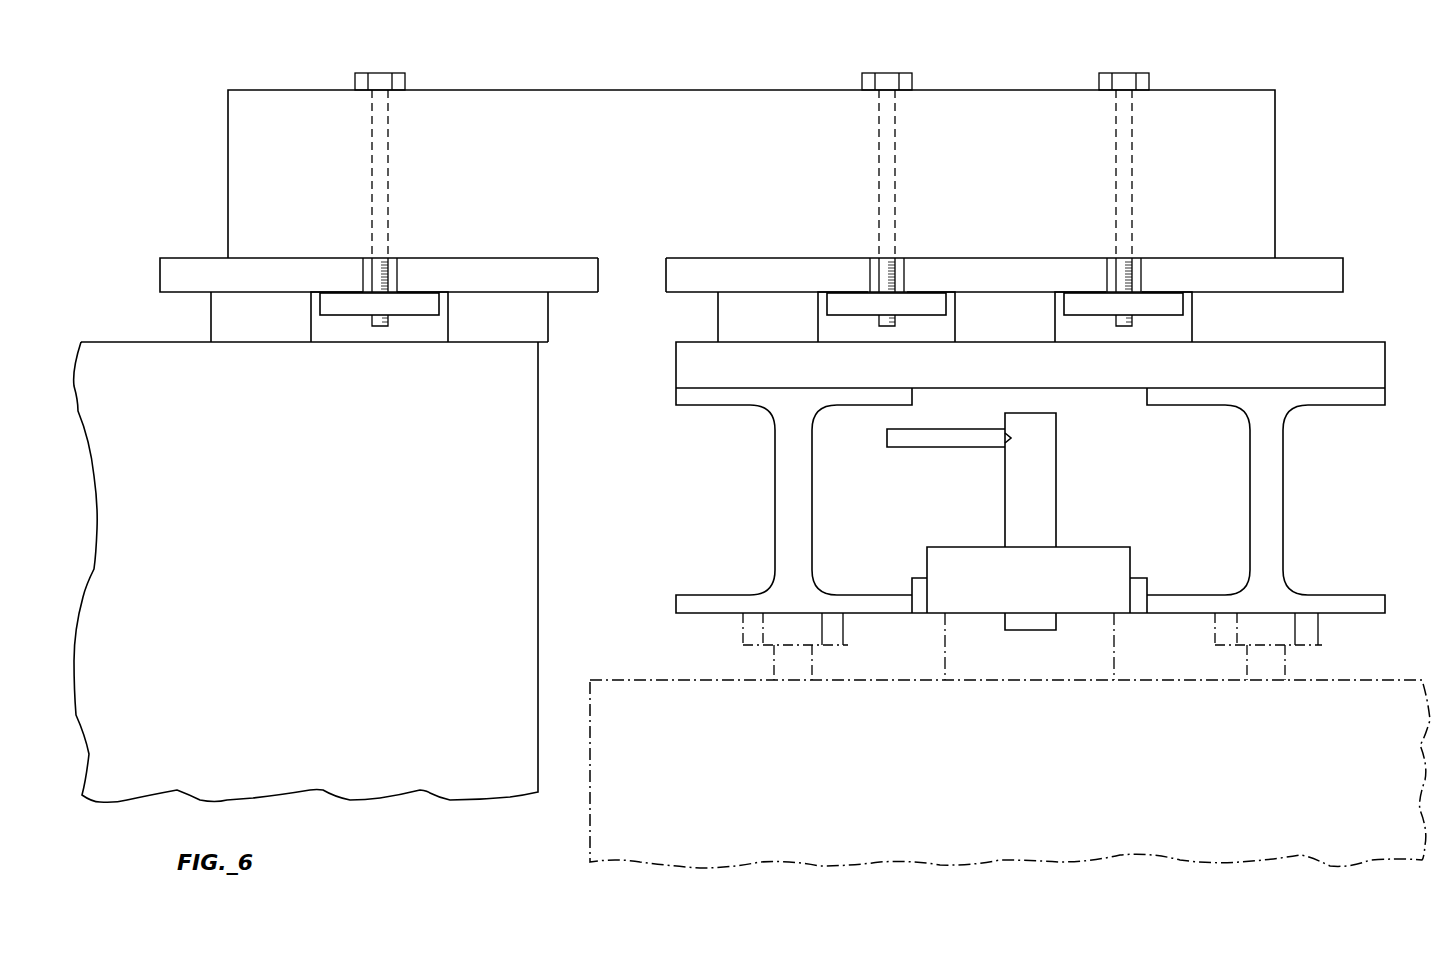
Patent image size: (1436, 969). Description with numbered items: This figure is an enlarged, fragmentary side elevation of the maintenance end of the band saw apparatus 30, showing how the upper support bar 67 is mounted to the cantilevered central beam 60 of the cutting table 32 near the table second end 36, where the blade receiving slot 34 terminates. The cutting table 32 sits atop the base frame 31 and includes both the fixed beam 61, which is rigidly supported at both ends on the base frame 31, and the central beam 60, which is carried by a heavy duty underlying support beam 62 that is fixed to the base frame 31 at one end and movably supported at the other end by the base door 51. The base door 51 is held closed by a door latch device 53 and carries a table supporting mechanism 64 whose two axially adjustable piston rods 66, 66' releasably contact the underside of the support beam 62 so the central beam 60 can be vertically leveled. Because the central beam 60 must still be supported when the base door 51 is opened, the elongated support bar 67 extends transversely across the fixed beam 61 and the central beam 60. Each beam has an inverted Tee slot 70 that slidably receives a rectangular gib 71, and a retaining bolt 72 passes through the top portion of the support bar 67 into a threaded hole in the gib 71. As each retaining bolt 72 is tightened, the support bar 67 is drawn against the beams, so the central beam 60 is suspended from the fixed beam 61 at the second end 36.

The band saw apparatus 30 is at (1336, 126).
The base frame 31 is at (457, 780).
The cutting table 32 is at (203, 311).
The blade receiving slot 34 is at (600, 279).
The second end 36 is at (532, 305).
The base door 51 is at (637, 678).
The door latch device 53 is at (945, 547).
The cantilevered central beam member 60 is at (1325, 256).
The fixed beam member 61 is at (243, 337).
The support beam 62 is at (775, 500).
The table supporting mechanism 64 is at (746, 658).
The piston rod 66 is at (810, 646).
The piston rod 66' is at (1287, 646).
The support bar 67 is at (1276, 207).
The inverted Tee slot 70 is at (313, 330).
The gib 71 is at (412, 315).
The retaining bolt 72 is at (382, 73).